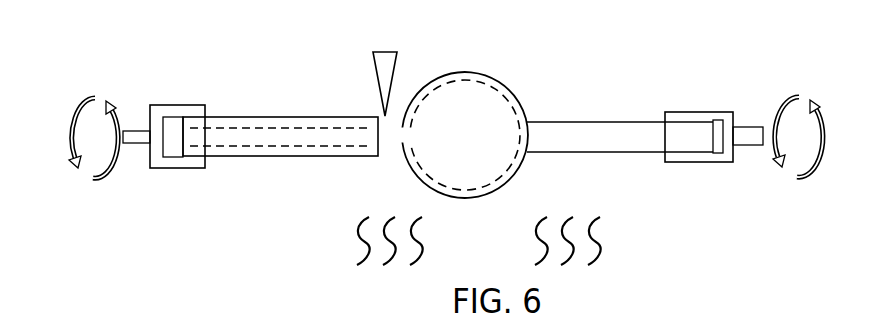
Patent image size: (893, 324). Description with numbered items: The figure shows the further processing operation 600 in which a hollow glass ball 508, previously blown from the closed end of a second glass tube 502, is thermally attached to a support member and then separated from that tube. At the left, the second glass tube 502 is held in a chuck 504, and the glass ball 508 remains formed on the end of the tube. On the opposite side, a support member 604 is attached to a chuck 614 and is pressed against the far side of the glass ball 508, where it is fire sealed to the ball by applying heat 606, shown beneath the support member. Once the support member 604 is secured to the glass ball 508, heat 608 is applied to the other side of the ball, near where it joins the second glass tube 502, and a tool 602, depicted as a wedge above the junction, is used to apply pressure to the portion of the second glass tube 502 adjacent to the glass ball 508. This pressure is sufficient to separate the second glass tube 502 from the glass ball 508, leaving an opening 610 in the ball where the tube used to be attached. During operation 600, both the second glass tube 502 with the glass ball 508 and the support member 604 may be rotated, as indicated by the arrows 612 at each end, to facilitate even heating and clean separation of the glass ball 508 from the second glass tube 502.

The further processing operation 600 is at (682, 28).
The arrows 612 is at (97, 97).
The chuck 504 is at (181, 105).
The second glass tube 502 is at (287, 116).
The tool 602 is at (376, 72).
The hollow glass ball 508 is at (498, 80).
The opening 610 is at (394, 143).
The support member 604 is at (616, 121).
The chuck 614 is at (702, 112).
The heat 608 is at (357, 240).
The heat 606 is at (600, 240).